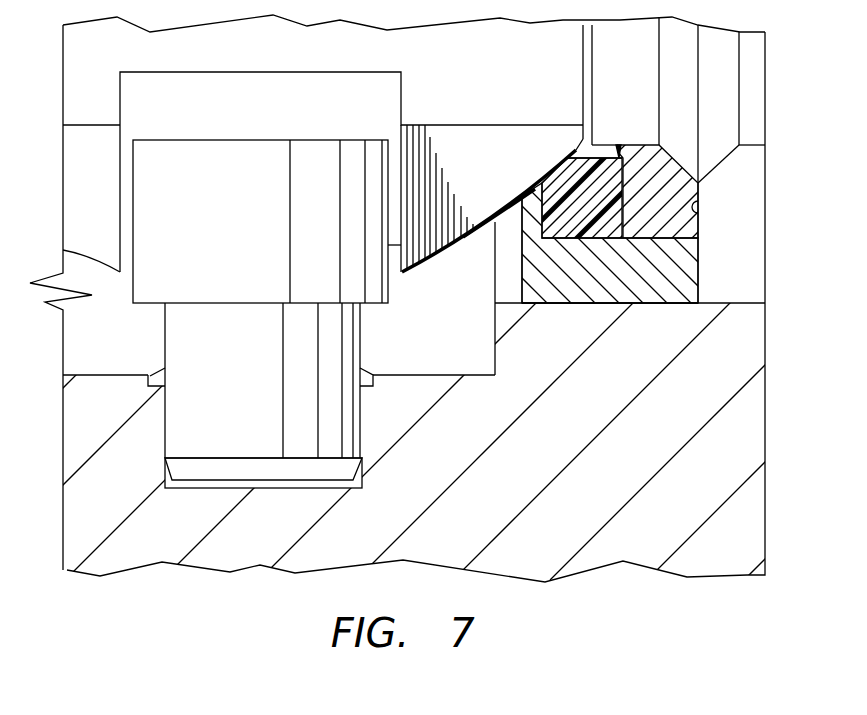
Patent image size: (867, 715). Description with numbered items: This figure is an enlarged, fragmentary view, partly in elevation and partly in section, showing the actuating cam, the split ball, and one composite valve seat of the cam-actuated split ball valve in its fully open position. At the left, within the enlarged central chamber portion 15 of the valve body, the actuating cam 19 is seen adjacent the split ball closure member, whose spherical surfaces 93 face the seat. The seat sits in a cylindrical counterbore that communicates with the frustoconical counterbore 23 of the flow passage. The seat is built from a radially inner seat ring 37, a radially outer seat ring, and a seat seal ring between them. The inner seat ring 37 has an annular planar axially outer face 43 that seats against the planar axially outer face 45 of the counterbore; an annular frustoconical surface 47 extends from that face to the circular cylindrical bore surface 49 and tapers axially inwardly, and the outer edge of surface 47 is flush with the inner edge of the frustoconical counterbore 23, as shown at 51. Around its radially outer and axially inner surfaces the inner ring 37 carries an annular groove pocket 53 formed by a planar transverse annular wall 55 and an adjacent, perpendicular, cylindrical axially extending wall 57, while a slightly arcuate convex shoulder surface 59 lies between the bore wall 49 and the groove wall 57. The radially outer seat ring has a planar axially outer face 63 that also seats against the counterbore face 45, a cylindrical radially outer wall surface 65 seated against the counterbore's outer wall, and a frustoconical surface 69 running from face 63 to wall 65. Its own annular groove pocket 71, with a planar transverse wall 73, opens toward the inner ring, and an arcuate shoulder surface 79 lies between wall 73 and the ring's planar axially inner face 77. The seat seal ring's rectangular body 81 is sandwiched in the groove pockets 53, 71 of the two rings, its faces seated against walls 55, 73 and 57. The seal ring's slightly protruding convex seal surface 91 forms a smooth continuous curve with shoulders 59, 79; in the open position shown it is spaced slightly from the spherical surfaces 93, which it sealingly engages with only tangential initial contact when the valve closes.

The central chamber portion 15 is at (140, 351).
The actuating cam 19 is at (165, 326).
The frustoconical counterbore 23 is at (727, 153).
The radially inner seat ring 37 is at (693, 231).
The axially outer face 43 is at (700, 190).
The axially outer face of counterbore 45 is at (702, 212).
The frustoconical surface 47 is at (677, 157).
The bore surface 49 is at (641, 143).
The flush junction 51 is at (700, 182).
The annular groove pocket 53 is at (619, 148).
The transversely extending annular wall 55 is at (607, 215).
The longitudinally extending annular wall 57 is at (595, 140).
The shoulder surface 59 is at (580, 148).
The axially outer face 63 is at (701, 304).
The radially outer wall surface 65 is at (544, 306).
The frustoconical surface 69 is at (690, 304).
The annular groove pocket 71 is at (522, 295).
The transversely extending annular wall 73 is at (540, 187).
The axially inner face 77 is at (522, 240).
The shoulder surface 79 is at (528, 212).
The seal ring body 81 is at (522, 270).
The seal surface 91 is at (558, 170).
The spherical surfaces 93 is at (414, 272).